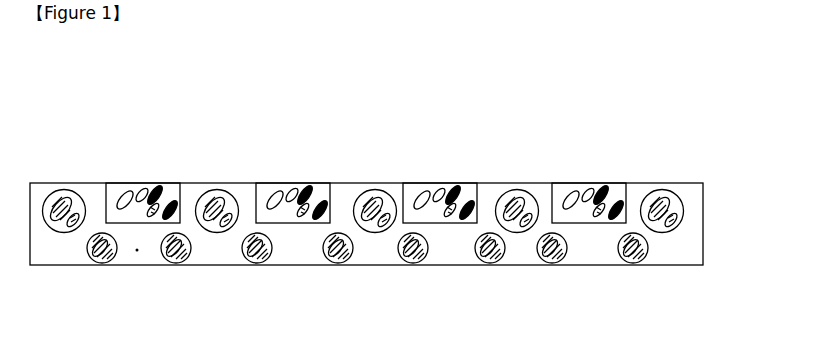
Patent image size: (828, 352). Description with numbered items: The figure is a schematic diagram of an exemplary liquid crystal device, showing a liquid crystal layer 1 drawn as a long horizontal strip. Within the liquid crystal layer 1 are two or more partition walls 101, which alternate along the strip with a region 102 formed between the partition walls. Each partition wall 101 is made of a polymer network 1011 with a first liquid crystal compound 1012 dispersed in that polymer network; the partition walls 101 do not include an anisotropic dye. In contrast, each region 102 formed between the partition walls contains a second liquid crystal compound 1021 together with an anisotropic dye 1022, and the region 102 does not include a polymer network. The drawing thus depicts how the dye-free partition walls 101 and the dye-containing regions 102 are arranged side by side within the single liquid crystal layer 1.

The liquid crystal layer 1 is at (79, 141).
The partition wall 101 is at (252, 182).
The region formed between partition walls 102 is at (328, 182).
The polymer network 1011 is at (133, 258).
The first liquid crystal compound 1012 is at (190, 264).
The second liquid crystal compound 1021 is at (419, 183).
The anisotropic dye 1022 is at (465, 181).